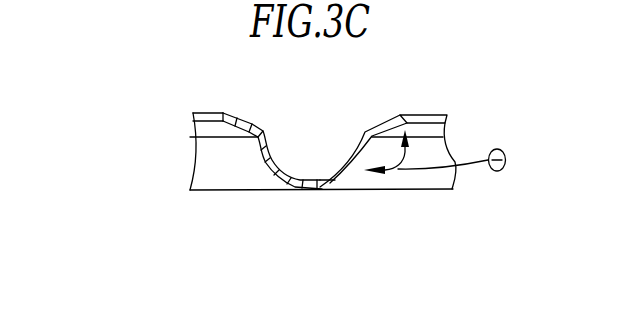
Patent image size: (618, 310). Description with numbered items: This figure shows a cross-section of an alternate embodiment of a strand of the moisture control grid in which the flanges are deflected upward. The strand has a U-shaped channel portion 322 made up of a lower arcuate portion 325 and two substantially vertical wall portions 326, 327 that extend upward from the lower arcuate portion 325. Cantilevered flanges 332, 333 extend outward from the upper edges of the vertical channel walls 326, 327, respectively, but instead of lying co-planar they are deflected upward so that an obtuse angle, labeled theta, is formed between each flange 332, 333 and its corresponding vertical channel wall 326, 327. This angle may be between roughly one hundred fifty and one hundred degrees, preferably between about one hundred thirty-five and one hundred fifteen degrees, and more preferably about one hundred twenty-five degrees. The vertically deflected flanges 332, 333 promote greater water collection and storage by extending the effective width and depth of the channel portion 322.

The U-shaped channel portion 322 is at (286, 105).
The lower arcuate portion 325 is at (292, 185).
The vertical wall portion 326 is at (260, 150).
The vertical wall portion 327 is at (363, 135).
The cantilevered flange 332 is at (222, 125).
The cantilevered flange 333 is at (366, 131).